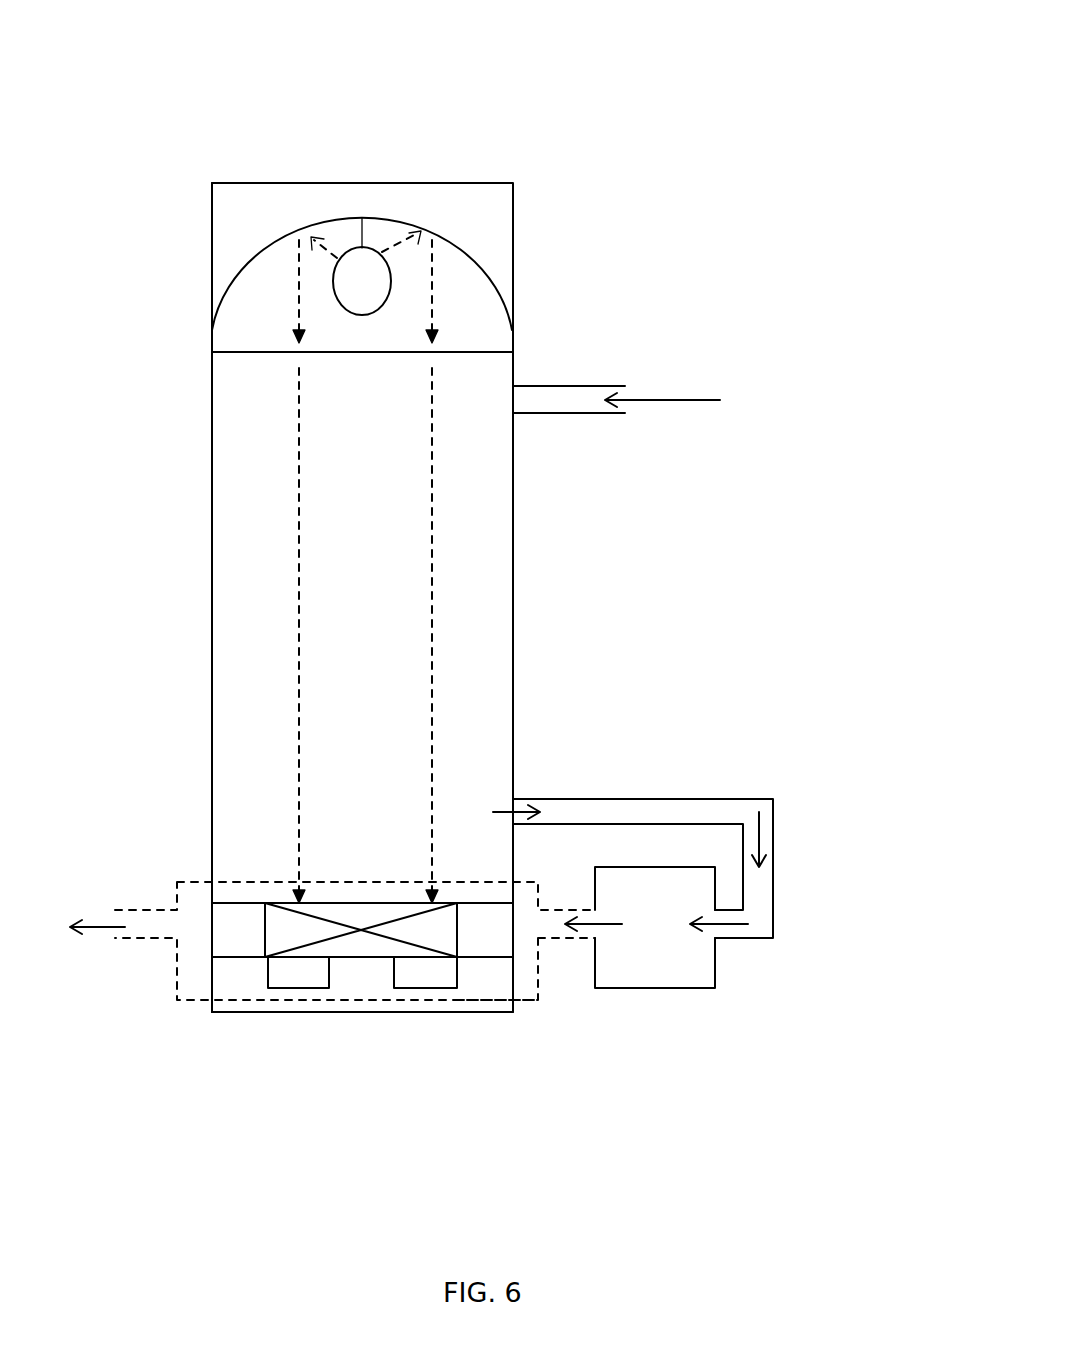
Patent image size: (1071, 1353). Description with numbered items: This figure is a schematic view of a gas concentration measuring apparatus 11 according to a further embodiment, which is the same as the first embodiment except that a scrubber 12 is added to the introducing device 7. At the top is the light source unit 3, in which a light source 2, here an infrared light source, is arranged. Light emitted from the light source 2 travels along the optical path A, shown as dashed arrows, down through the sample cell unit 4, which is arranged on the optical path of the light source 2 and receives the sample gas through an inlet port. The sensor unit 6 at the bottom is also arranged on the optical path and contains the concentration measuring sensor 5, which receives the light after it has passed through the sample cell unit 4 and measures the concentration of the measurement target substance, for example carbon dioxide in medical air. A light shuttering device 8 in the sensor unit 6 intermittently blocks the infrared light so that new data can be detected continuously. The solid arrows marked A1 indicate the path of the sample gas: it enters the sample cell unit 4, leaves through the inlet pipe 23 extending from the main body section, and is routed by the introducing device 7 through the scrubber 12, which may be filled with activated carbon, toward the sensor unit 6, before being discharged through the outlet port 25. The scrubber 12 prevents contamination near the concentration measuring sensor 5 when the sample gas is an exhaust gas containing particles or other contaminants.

The light source 2 is at (372, 275).
The light source unit 3 is at (253, 181).
The sample cell unit 4 is at (212, 500).
The concentration measuring sensor 5 is at (297, 989).
The sensor unit 6 is at (210, 988).
The introducing device 7 is at (525, 1001).
The light shuttering device 8 is at (357, 958).
The gas concentration measuring apparatus 11 is at (563, 193).
The scrubber 12 is at (653, 988).
The inlet pipe 23 is at (772, 893).
The outlet port 25 is at (148, 910).
The optical path A is at (298, 648).
The path of the sample gas A1 is at (676, 400).